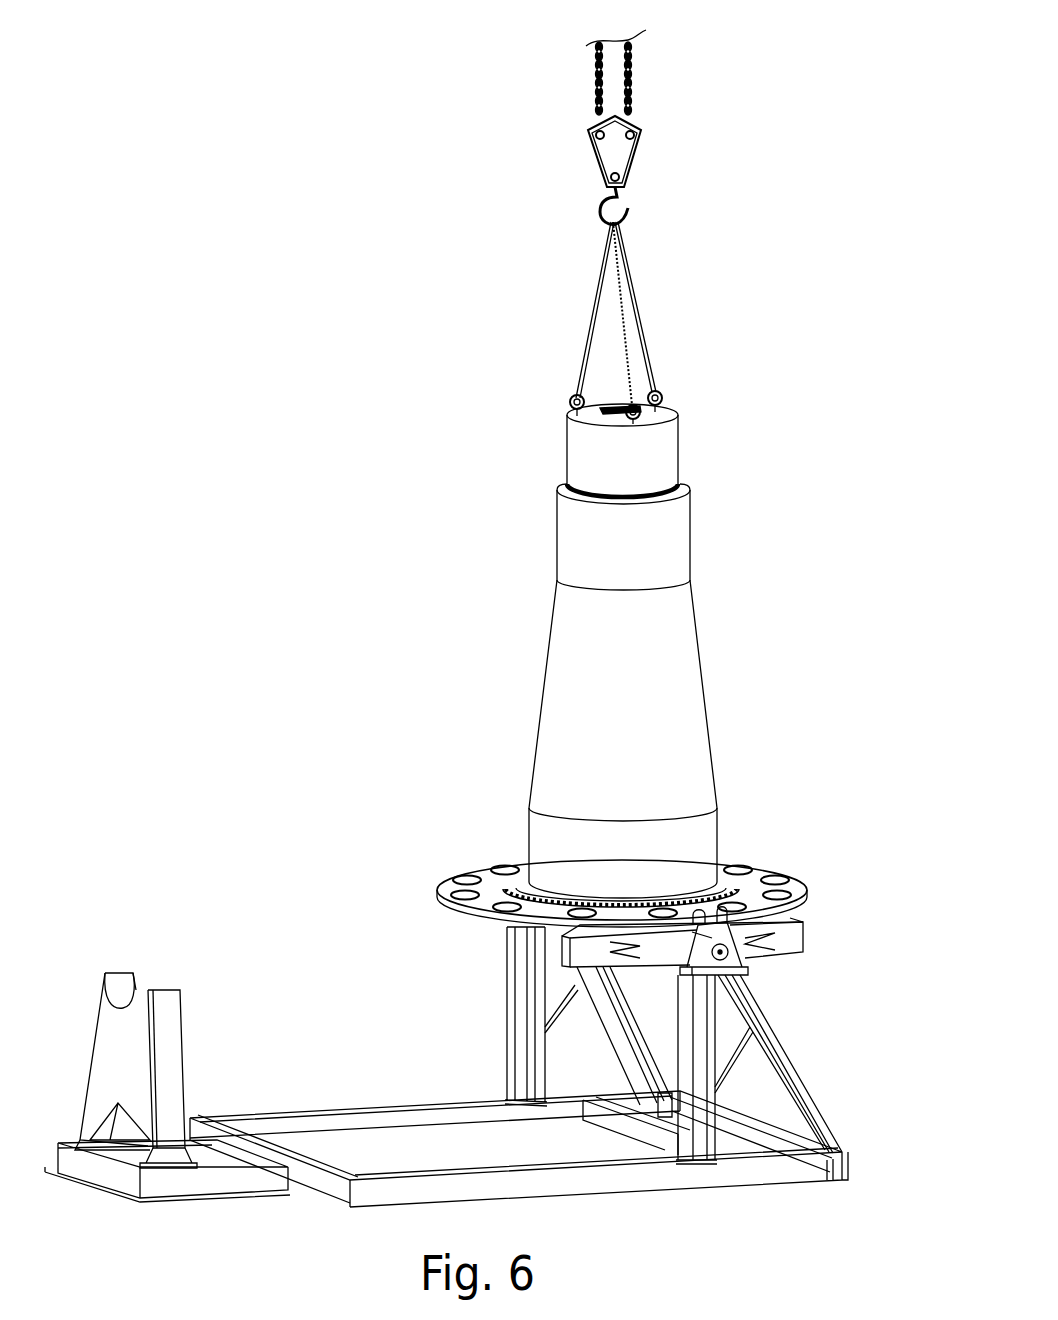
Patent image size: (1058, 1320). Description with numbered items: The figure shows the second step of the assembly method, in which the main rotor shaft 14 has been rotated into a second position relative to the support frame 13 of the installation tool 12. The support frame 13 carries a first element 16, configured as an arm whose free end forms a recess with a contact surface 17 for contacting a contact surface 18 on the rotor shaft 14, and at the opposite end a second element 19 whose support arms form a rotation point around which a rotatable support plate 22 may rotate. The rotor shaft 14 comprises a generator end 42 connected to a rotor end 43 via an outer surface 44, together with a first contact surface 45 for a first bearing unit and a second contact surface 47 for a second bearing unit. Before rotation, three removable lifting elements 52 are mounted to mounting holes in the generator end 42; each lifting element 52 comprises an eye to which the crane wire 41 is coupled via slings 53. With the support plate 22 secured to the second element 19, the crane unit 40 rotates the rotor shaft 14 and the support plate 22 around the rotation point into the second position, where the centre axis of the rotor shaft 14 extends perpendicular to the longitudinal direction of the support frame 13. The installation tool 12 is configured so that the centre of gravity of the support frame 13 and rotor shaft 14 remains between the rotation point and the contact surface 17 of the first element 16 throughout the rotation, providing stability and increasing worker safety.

The installation tool 12 is at (318, 988).
The support frame 13 is at (318, 1125).
The main rotor shaft 14 is at (540, 664).
The first element 16 is at (180, 1037).
The contact surface 17 is at (123, 978).
The contact surface 18 is at (590, 460).
The second element 19 is at (500, 1020).
The rotatable support plate 22 is at (813, 938).
The crane unit 40 is at (562, 13).
The crane wire 41 is at (632, 78).
The generator end 42 is at (678, 413).
The rotor end 43 is at (779, 868).
The outer surface 44 is at (638, 713).
The first contact surface 45 is at (638, 875).
The second contact surface 47 is at (638, 552).
The removable lifting elements 52 is at (571, 400).
The slings 53 is at (648, 300).